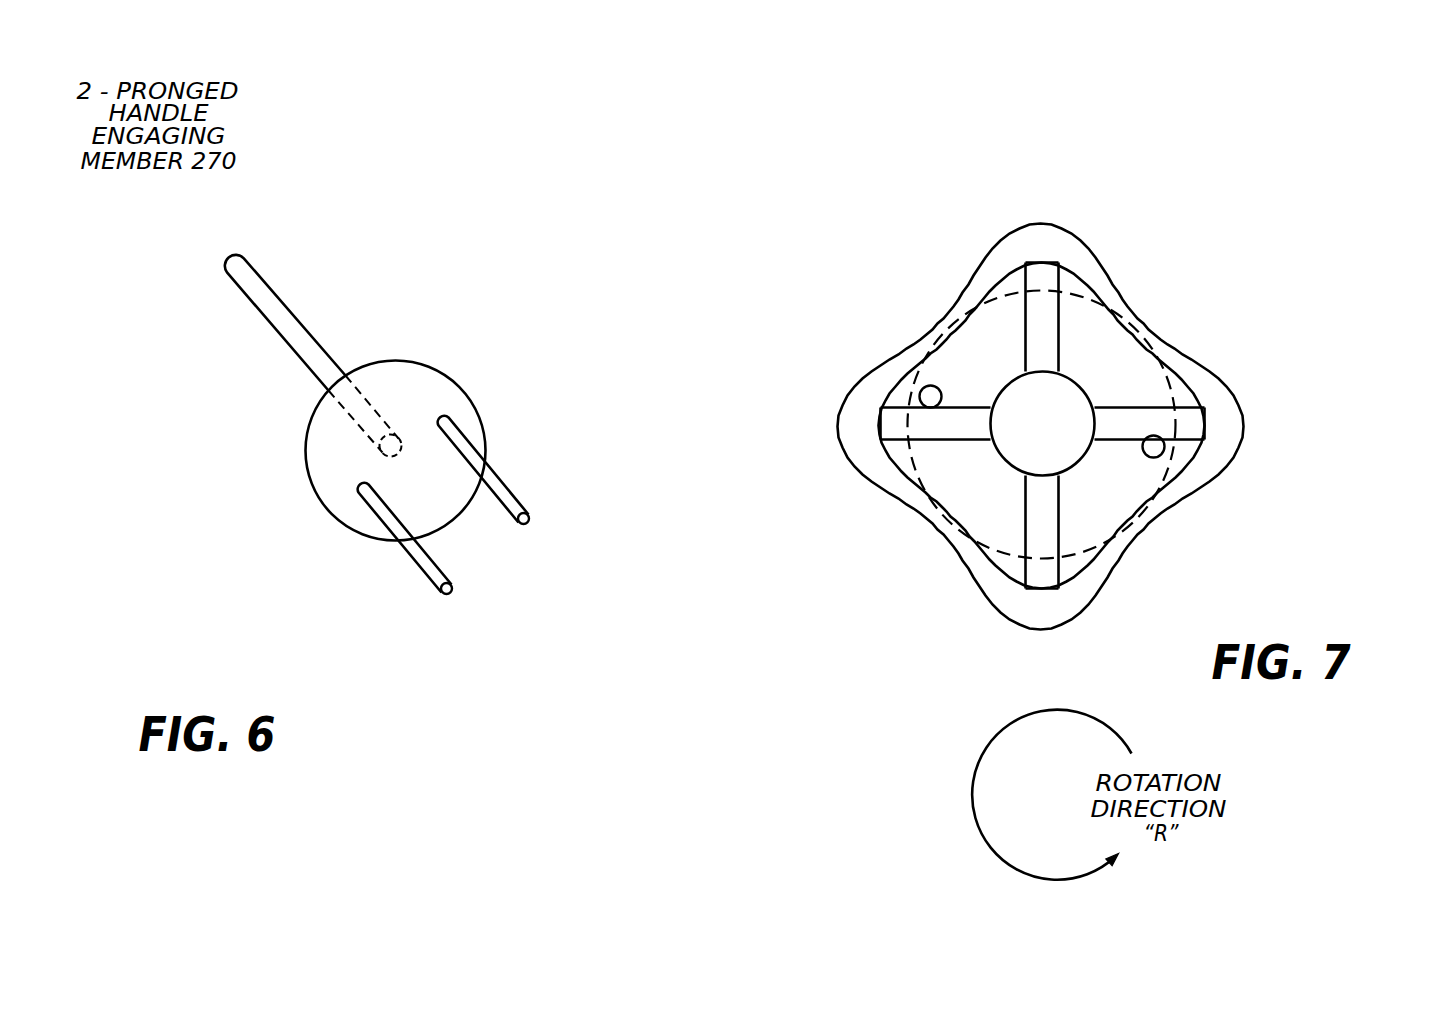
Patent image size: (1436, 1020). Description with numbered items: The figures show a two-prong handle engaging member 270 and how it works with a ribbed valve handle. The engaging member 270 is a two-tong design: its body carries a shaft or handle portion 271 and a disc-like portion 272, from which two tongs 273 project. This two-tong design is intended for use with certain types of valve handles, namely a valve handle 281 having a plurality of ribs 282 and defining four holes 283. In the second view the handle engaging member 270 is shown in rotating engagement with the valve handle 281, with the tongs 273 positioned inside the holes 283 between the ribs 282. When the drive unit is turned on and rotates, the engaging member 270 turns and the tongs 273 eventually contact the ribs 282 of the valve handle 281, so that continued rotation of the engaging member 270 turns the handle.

In FIG. 6, the two-prong handle engaging member 270 is at (502, 338).
In FIG. 6, the handle 271 is at (295, 335).
In FIG. 6, the disc body of engaging member 272 is at (328, 450).
In FIG. 7, the disc body of engaging member 272 is at (1087, 332).
In FIG. 6, the tongs 273 is at (517, 497).
In FIG. 7, the tongs 273 is at (1157, 450).
In FIG. 7, the valve handle 281 is at (900, 365).
In FIG. 7, the ribs 282 is at (802, 565).
In FIG. 7, the holes 283 is at (1067, 283).